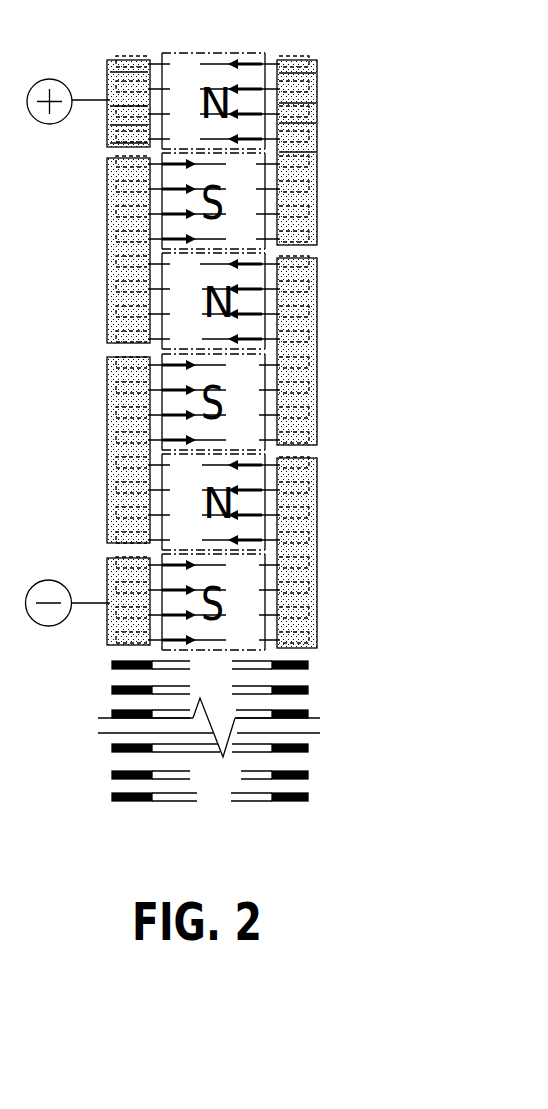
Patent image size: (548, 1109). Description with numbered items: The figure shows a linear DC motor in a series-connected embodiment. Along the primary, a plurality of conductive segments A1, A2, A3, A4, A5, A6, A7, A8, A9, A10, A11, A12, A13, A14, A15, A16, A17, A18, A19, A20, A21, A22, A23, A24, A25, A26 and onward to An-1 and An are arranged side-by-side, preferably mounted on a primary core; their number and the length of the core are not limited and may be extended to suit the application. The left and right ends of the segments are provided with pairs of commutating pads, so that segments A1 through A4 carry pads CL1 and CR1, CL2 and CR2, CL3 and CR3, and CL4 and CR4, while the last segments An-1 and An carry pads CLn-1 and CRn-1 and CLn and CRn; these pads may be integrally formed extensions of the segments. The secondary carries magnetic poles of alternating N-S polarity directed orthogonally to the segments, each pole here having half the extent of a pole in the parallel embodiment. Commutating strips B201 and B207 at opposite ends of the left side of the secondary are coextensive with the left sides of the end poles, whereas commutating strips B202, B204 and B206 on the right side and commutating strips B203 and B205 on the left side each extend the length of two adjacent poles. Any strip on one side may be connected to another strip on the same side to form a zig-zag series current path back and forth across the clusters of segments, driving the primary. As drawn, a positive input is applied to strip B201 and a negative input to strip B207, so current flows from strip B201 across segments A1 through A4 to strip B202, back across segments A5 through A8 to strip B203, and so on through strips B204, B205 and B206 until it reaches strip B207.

The commutating strip B201 is at (111, 59).
The commutating strip B202 is at (317, 203).
The commutating strip B203 is at (107, 265).
The commutating strip B204 is at (318, 376).
The commutating strip B205 is at (108, 452).
The commutating strip B206 is at (318, 563).
The commutating strip B207 is at (108, 616).
The commutating pad CL1 is at (123, 72).
The commutating pad CL2 is at (117, 107).
The commutating pad CL3 is at (118, 126).
The commutating pad CL4 is at (118, 144).
The commutating pad CLn-1 is at (112, 775).
The commutating pad CLn is at (112, 798).
The commutating pad CR1 is at (318, 73).
The commutating pad CR2 is at (316, 103).
The commutating pad CR3 is at (320, 123).
The commutating pad CR4 is at (322, 152).
The commutating pad CRn-1 is at (308, 775).
The commutating pad CRn is at (308, 797).
The conductive segment A1 is at (214, 64).
The conductive segment A2 is at (214, 89).
The conductive segment A3 is at (214, 114).
The conductive segment A4 is at (214, 139).
The conductive segment A5 is at (214, 164).
The conductive segment A6 is at (214, 189).
The conductive segment A7 is at (214, 214).
The conductive segment A8 is at (214, 239).
The conductive segment A9 is at (214, 264).
The conductive segment A10 is at (214, 289).
The conductive segment A11 is at (214, 314).
The conductive segment A12 is at (214, 339).
The conductive segment A13 is at (214, 365).
The conductive segment A14 is at (214, 390).
The conductive segment A15 is at (214, 415).
The conductive segment A16 is at (214, 440).
The conductive segment A17 is at (214, 465).
The conductive segment A18 is at (214, 490).
The conductive segment A19 is at (214, 515).
The conductive segment A20 is at (214, 540).
The conductive segment A21 is at (214, 565).
The conductive segment A22 is at (214, 590).
The conductive segment A23 is at (214, 615).
The conductive segment A24 is at (214, 640).
The conductive segment A25 is at (210, 665).
The conductive segment A26 is at (210, 690).
The conductive segment An-1 is at (210, 775).
The conductive segment An is at (210, 797).